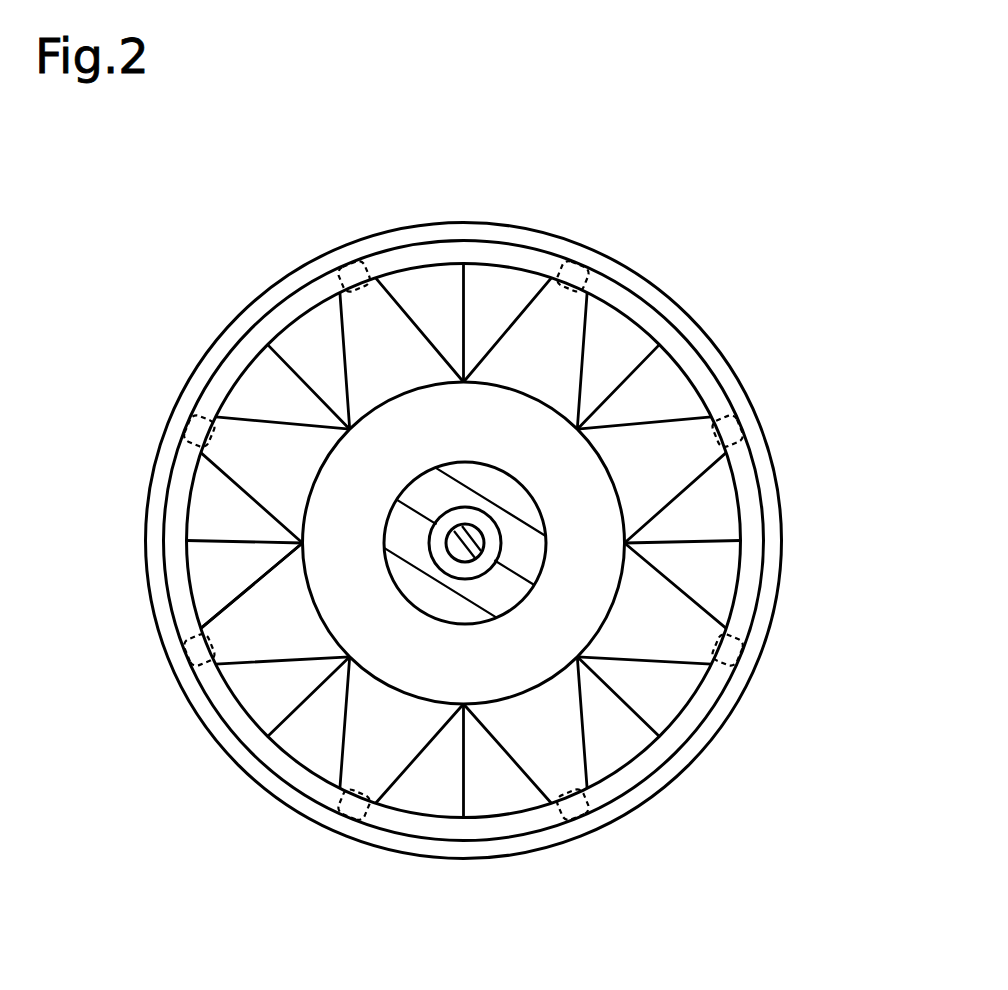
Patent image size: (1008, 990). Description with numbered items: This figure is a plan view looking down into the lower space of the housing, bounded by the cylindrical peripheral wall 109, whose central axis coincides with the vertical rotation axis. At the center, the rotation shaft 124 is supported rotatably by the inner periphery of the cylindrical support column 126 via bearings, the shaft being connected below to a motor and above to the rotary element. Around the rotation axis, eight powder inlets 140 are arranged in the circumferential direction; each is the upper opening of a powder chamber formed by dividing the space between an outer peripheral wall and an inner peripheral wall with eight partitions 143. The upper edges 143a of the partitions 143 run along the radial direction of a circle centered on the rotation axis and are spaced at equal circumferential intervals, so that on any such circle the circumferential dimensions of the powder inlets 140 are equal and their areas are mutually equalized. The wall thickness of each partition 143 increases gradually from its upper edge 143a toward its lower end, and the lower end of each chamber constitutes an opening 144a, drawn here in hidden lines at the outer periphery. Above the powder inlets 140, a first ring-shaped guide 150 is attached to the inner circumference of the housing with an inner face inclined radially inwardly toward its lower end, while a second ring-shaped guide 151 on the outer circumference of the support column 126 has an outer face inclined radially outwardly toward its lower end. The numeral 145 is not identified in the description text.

The cylindrical peripheral wall 109 is at (700, 319).
The rotation shaft 124 is at (460, 556).
The support column 126 is at (478, 482).
The powder inlet 140 is at (463, 540).
The partition 143 is at (315, 360).
The upper edge 143a is at (466, 290).
The opening 144a is at (352, 268).
The pole tip 145 is at (255, 393).
The first ring-shaped guide 150 is at (408, 258).
The second ring-shaped guide 151 is at (602, 578).